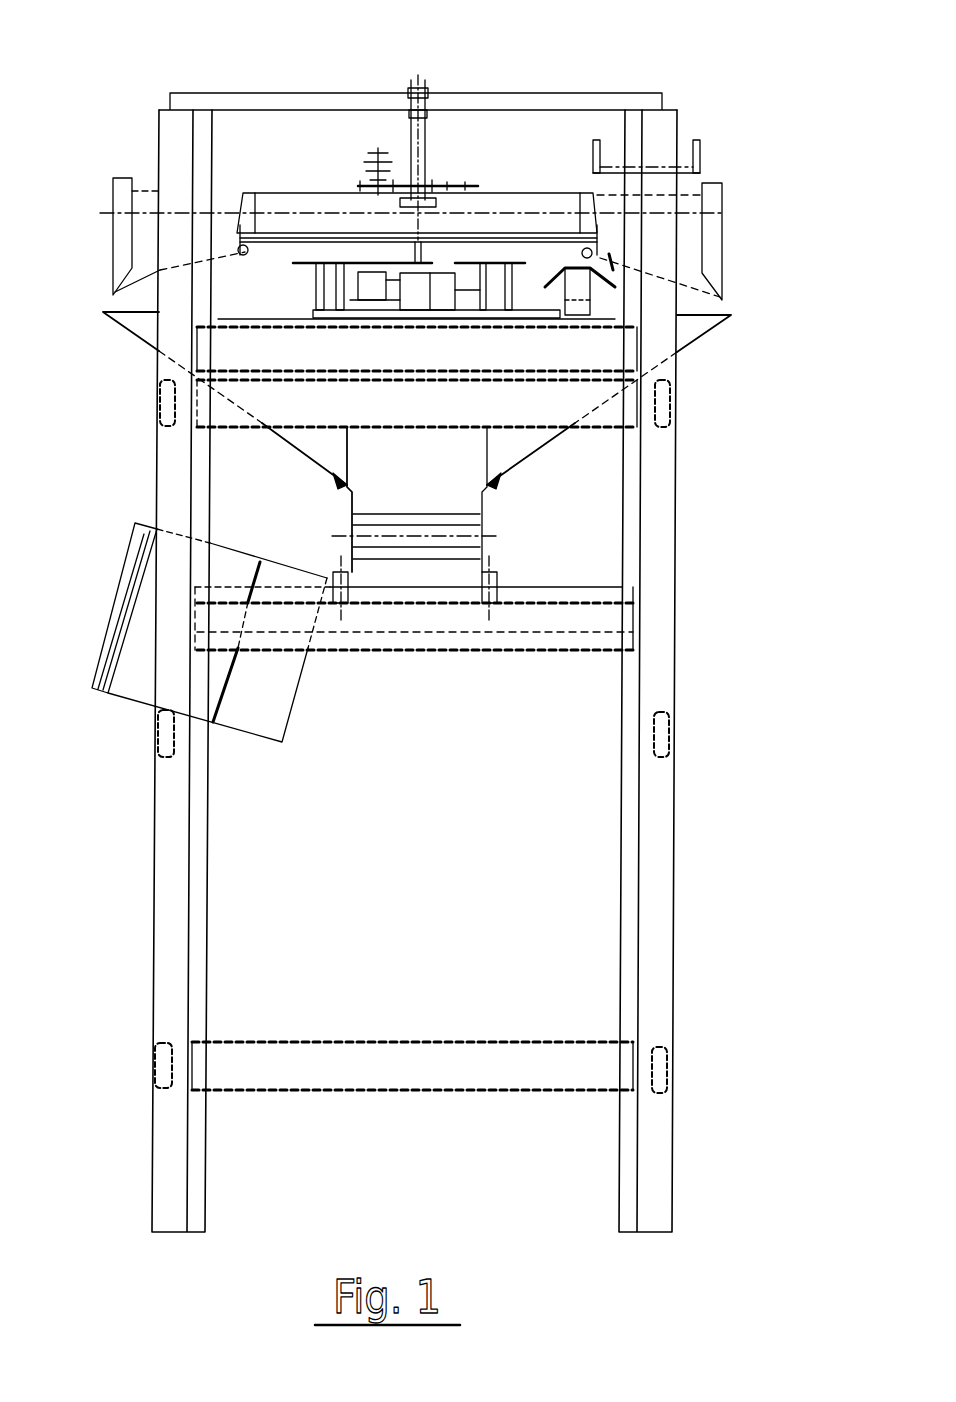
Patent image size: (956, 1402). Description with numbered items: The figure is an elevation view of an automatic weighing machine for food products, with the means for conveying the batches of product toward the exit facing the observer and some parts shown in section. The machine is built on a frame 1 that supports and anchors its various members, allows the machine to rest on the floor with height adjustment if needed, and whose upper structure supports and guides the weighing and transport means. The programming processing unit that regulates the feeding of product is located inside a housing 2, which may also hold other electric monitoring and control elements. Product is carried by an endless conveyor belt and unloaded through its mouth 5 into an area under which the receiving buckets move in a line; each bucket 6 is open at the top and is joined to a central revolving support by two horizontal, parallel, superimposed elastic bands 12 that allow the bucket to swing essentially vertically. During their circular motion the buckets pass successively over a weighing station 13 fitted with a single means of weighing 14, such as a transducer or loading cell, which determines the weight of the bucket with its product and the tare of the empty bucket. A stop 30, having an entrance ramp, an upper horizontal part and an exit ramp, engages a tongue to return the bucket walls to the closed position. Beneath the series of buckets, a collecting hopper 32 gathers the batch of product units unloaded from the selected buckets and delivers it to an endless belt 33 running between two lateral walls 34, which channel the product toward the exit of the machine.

The frame 1 is at (270, 98).
The housing 2 is at (135, 655).
The mouth 5 is at (685, 160).
The bucket 6 is at (692, 243).
The elastic bands 12 is at (273, 195).
The weighing station 13 is at (378, 268).
The means of weighing 14 is at (437, 300).
The stop 30 is at (578, 292).
The collecting hopper 32 is at (505, 442).
The endless belt 33 is at (430, 515).
The lateral walls 34 is at (352, 492).